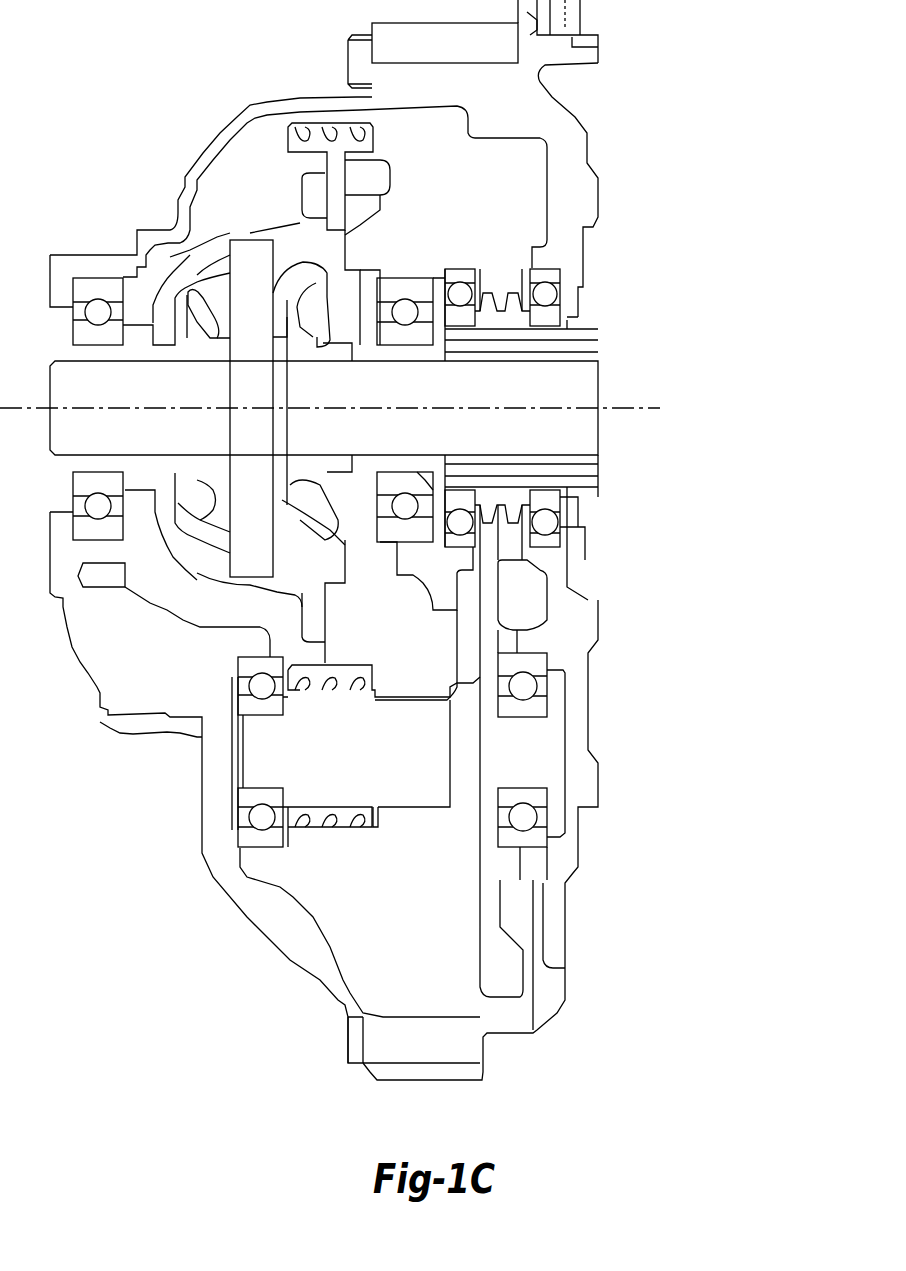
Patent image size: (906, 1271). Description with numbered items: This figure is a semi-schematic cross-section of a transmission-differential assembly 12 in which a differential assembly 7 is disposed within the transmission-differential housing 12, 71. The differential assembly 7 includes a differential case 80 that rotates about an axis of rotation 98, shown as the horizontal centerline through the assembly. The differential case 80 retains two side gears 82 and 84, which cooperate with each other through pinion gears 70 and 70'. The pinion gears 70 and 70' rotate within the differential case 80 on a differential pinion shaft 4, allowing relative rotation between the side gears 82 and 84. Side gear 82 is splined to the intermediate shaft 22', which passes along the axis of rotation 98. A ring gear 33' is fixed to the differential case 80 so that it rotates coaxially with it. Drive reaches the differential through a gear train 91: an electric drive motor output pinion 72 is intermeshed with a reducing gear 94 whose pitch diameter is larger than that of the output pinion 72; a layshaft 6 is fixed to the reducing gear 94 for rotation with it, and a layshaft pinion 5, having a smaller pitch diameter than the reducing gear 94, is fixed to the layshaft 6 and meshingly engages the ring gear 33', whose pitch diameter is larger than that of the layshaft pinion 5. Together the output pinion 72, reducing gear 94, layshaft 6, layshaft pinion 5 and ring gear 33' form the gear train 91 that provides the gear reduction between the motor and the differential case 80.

The differential pinion shaft 4 is at (249, 242).
The layshaft pinion 5 is at (343, 827).
The layshaft 6 is at (537, 752).
The differential assembly 7 is at (193, 574).
The transmission-differential assembly 12 is at (253, 953).
The intermediate shaft 22' is at (324, 402).
The ring gear 33' is at (384, 654).
The pinion gear 70 is at (357, 542).
The pinion gear 70' is at (372, 337).
The transmission-differential housing 71 is at (437, 1050).
The electric drive motor output pinion 72 is at (520, 495).
The differential case 80 is at (167, 545).
The side gear 82 is at (192, 290).
The side gear 84 is at (321, 313).
The gear train 91 is at (378, 827).
The reducing gear 94 is at (530, 630).
The axis of rotation 98 is at (637, 408).